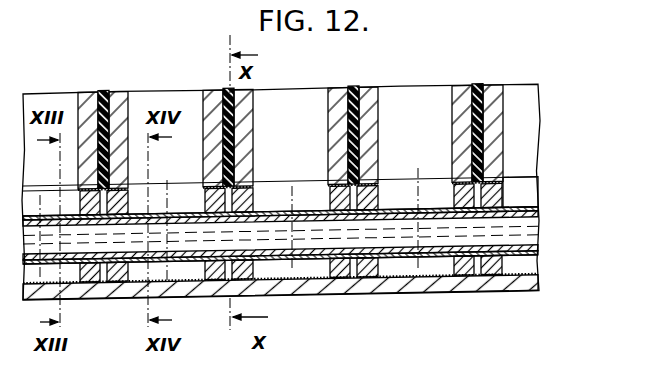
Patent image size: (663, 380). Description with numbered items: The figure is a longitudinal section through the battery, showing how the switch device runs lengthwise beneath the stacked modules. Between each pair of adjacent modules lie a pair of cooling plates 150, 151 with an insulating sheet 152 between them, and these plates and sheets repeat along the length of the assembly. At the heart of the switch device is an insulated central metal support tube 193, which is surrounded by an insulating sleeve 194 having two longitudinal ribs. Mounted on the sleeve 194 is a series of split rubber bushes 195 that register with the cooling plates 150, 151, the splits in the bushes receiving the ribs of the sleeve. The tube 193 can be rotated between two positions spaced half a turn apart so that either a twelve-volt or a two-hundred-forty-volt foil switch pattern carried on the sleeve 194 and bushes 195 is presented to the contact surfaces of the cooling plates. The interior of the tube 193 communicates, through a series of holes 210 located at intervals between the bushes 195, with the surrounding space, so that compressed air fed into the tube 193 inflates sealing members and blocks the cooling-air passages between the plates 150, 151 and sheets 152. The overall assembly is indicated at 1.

The heat exchanger assembly 1 is at (277, 97).
The cooling plate 150 is at (127, 104).
The cooling plate 151 is at (84, 95).
The insulating sheet 152 is at (100, 103).
The central metal support tube 193 is at (536, 218).
The insulating sleeve 194 is at (510, 203).
The split rubber bush 195 is at (80, 203).
The holes 210 is at (293, 186).